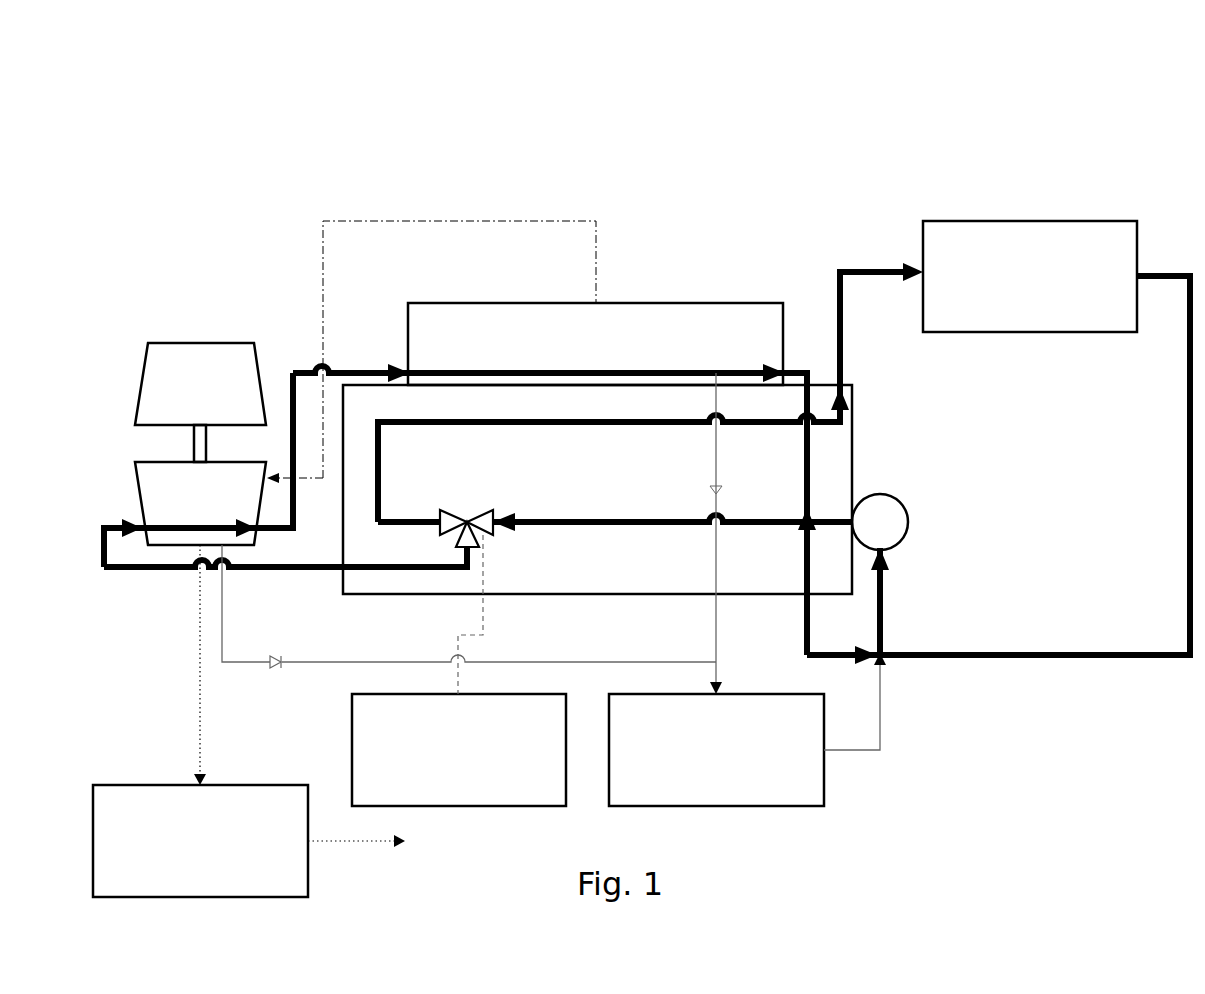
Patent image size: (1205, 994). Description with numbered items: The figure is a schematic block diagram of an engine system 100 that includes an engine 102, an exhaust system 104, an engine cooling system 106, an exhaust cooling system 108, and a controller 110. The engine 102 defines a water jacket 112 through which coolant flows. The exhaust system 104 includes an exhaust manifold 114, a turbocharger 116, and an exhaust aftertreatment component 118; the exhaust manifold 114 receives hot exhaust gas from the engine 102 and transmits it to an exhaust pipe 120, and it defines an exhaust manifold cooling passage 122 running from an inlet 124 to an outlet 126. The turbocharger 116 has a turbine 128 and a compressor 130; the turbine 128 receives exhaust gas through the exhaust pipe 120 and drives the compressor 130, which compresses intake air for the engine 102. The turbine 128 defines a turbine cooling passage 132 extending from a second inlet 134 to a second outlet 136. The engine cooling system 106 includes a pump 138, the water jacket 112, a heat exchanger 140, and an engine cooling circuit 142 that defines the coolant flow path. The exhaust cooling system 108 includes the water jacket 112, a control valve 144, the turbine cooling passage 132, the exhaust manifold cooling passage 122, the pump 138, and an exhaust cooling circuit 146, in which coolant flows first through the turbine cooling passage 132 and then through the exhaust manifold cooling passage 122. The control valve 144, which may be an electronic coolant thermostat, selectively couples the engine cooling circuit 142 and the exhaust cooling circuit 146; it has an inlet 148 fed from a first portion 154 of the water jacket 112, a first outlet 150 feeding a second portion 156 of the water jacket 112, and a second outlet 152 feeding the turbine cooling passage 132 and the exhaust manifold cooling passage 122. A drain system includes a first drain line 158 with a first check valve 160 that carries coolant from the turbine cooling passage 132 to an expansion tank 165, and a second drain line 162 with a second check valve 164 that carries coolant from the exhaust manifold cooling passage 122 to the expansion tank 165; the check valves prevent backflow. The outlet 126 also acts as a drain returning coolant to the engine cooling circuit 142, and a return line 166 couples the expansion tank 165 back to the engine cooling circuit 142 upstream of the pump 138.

The engine system 100 is at (806, 140).
The engine 102 is at (597, 489).
The exhaust system 104 is at (280, 306).
The engine cooling system 106 is at (1086, 748).
The exhaust cooling system 108 is at (179, 620).
The controller 110 is at (459, 670).
The water jacket 112 is at (770, 520).
The exhaust manifold 114 is at (595, 344).
The turbocharger 116 is at (112, 446).
The exhaust aftertreatment component 118 is at (249, 721).
The exhaust pipe 120 is at (425, 221).
The exhaust manifold cooling passage 122 is at (468, 372).
The inlet 124 is at (403, 370).
The outlet 126 is at (785, 370).
The turbine 128 is at (200, 503).
The compressor 130 is at (200, 384).
The turbine cooling passage 132 is at (167, 527).
The second inlet 134 is at (137, 526).
The second outlet 136 is at (256, 530).
The pump 138 is at (908, 522).
The heat exchanger 140 is at (1030, 276).
The engine cooling circuit 142 is at (1098, 658).
The control valve 144 is at (451, 499).
The exhaust cooling circuit 146 is at (160, 570).
The inlet 148 is at (478, 516).
The first outlet 150 is at (443, 515).
The second outlet 152 is at (458, 546).
The first portion 154 is at (520, 523).
The second portion 156 is at (416, 522).
The first drain line 158 is at (345, 662).
The first check valve 160 is at (276, 670).
The second drain line 162 is at (716, 463).
The second check valve 164 is at (712, 491).
The expansion tank 165 is at (716, 750).
The return line 166 is at (882, 722).